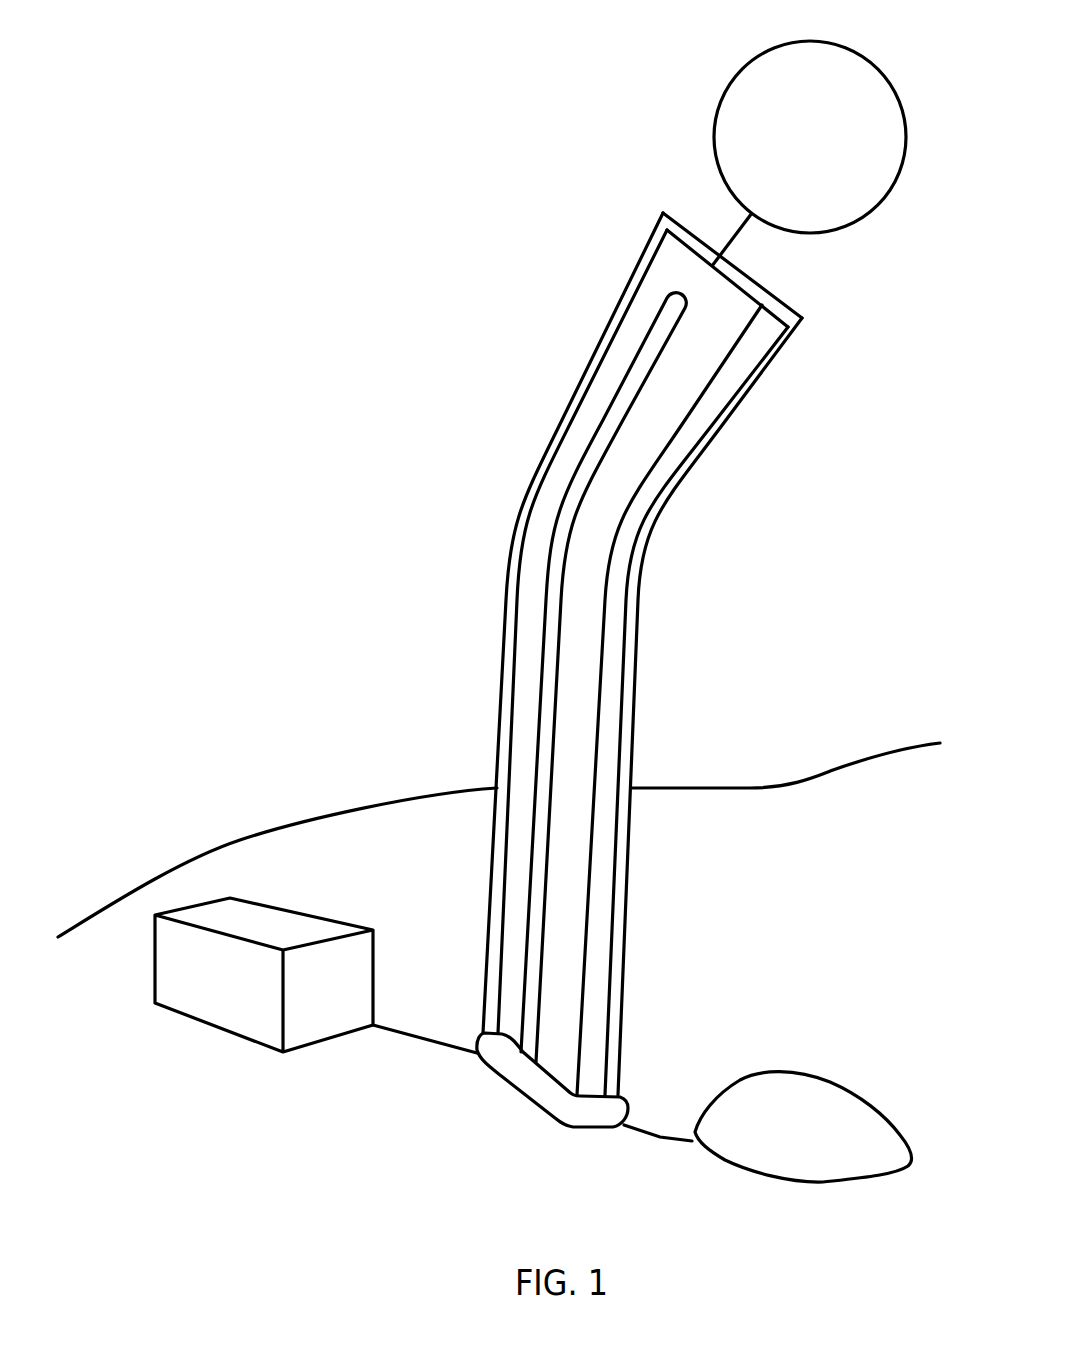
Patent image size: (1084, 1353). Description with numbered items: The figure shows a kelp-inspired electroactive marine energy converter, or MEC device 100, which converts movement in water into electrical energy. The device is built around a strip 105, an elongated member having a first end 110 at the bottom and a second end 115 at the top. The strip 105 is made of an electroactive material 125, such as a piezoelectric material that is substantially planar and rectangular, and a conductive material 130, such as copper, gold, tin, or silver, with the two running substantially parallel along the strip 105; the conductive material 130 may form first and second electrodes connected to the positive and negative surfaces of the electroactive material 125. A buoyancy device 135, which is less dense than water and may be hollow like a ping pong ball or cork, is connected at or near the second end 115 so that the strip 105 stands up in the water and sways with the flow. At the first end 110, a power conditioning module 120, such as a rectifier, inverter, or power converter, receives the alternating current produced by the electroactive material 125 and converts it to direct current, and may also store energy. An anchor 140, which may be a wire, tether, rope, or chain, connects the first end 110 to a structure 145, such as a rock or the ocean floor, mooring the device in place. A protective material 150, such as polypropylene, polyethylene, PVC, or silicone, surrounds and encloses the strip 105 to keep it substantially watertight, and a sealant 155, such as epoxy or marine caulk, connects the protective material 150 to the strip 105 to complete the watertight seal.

The MEC device 100 is at (397, 55).
The strip 105 is at (568, 328).
The first end 110 is at (630, 1070).
The second end 115 is at (797, 343).
The power conditioning module 120 is at (237, 995).
The electroactive material 125 is at (672, 407).
The conductive material 130 is at (603, 442).
The buoyancy device 135 is at (822, 147).
The anchor 140 is at (657, 1135).
The structure 145 is at (812, 1150).
The protective material 150 is at (643, 578).
The sealant 155 is at (508, 1085).